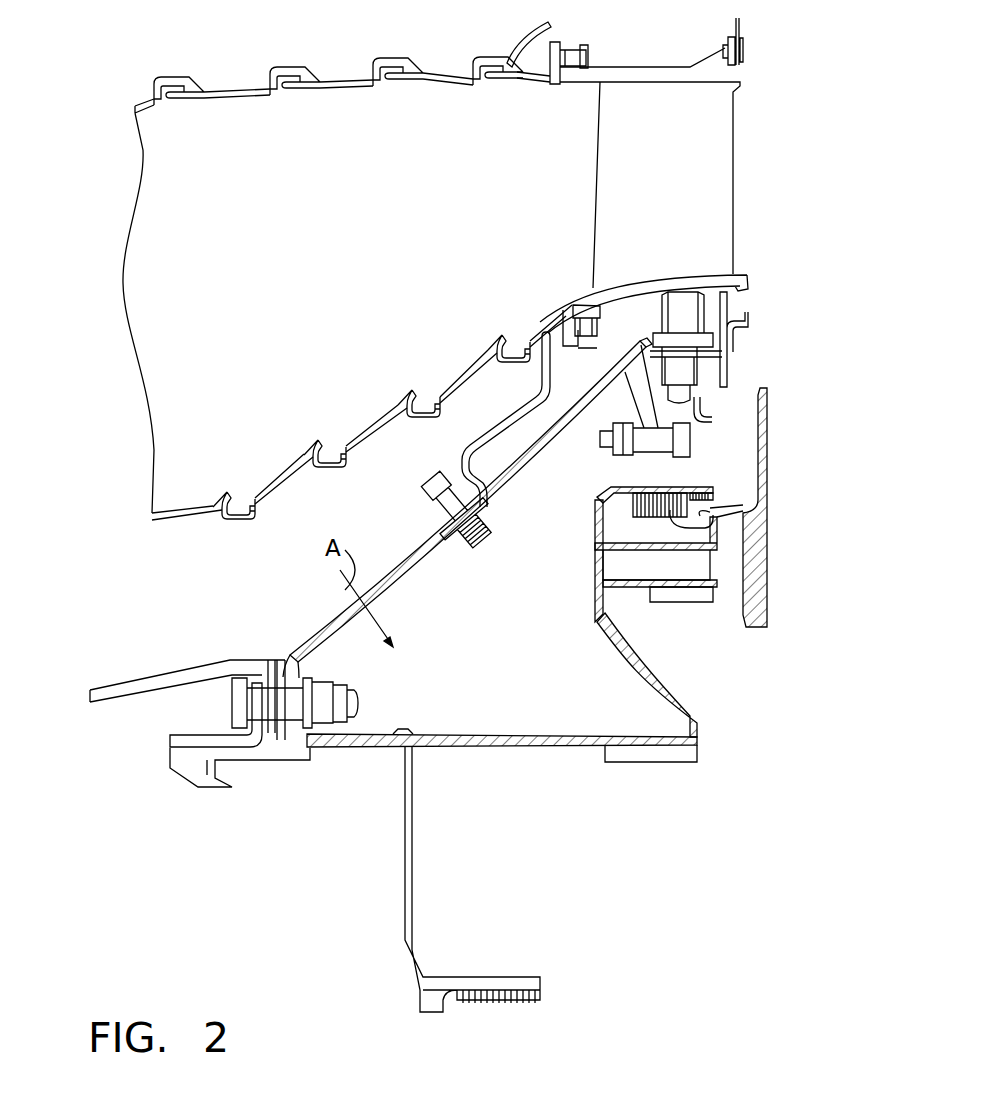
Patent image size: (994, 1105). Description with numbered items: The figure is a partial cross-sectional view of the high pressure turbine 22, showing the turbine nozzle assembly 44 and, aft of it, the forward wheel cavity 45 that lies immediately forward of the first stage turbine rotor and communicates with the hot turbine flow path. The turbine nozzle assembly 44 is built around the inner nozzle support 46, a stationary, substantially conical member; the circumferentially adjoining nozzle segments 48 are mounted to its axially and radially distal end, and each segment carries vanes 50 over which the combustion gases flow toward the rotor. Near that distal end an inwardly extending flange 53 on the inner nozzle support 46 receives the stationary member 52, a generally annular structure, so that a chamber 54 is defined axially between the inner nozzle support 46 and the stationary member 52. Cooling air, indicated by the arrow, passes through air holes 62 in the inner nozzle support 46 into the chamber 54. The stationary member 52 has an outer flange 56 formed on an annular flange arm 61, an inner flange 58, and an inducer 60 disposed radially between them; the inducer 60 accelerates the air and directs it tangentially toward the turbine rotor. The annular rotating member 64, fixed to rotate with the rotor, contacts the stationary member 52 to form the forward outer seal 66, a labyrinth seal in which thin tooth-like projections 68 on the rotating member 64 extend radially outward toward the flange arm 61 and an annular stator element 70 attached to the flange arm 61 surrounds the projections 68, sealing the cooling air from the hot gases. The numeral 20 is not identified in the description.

The combustor/casing panel 20 is at (350, 260).
The high pressure turbine 22 is at (752, 213).
The turbine nozzle assembly 44 is at (527, 434).
The forward wheel cavity 45 is at (820, 340).
The inner nozzle support 46 is at (422, 555).
The nozzle segments 48 is at (562, 283).
The vanes 50 is at (670, 180).
The stationary member 52 is at (598, 537).
The inwardly extending flange 53 is at (630, 400).
The chamber 54 is at (483, 620).
The outer flange 56 is at (655, 430).
The inner flange 58 is at (307, 670).
The inducer 60 is at (625, 588).
The flange arm 61 is at (633, 483).
The air holes 62 is at (347, 607).
The rotating member 64 is at (753, 537).
The forward outer seal 66 is at (737, 482).
The tooth-like projections 68 is at (667, 517).
The stator element 70 is at (632, 508).